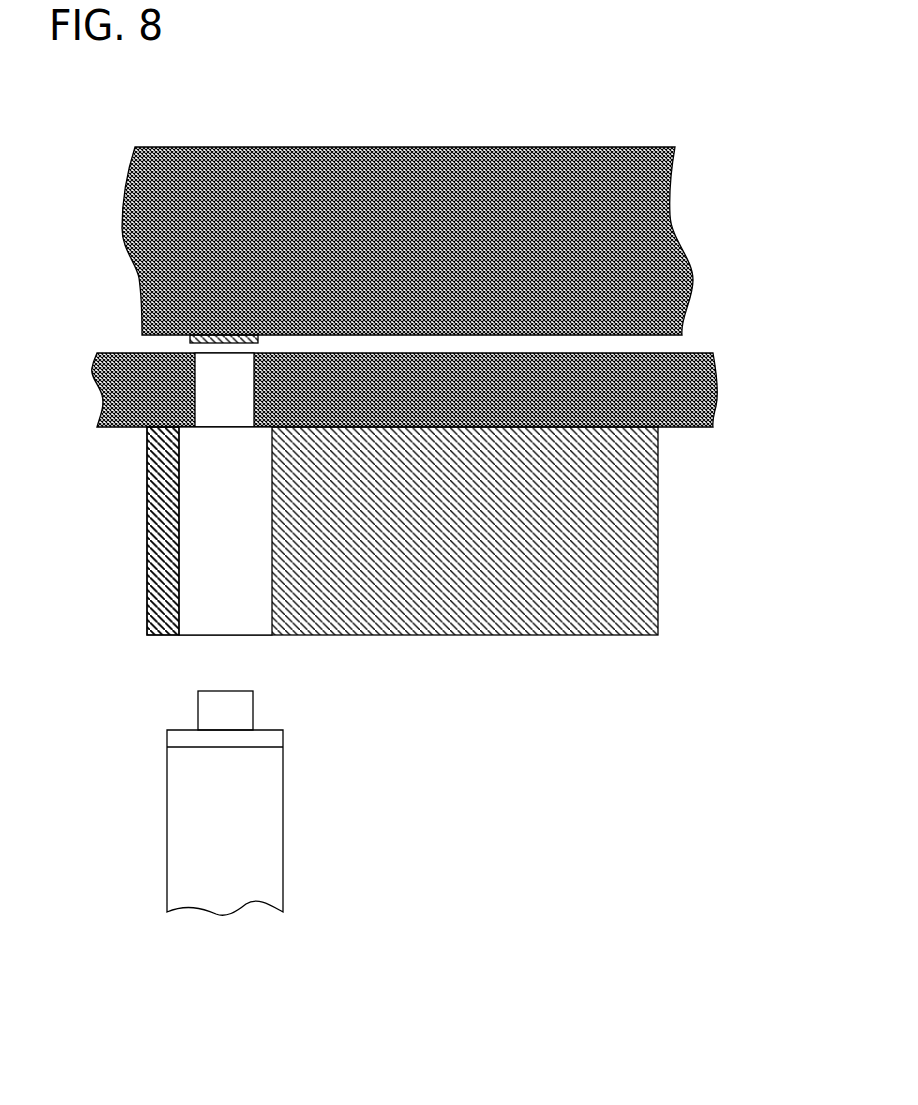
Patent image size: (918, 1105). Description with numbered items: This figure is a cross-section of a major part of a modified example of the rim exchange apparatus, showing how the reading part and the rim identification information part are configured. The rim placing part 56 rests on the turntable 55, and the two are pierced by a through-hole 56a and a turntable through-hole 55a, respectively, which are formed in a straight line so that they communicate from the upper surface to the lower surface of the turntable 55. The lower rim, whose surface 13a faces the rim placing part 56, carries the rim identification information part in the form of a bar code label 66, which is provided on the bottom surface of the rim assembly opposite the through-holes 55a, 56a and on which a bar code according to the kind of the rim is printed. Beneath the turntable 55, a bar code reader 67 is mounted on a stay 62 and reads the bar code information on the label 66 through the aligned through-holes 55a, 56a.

The medium (recording sheet) surface 13a is at (692, 279).
The bar code label 66 is at (140, 324).
The rim placing part 56 is at (713, 400).
The through-hole 56a is at (200, 382).
The turntable 55 is at (655, 555).
The turntable through-hole 55a is at (183, 565).
The bar code reader 67 is at (215, 710).
The stay 62 is at (283, 811).